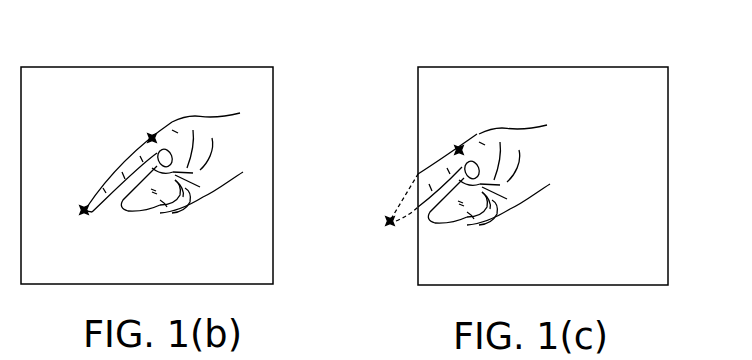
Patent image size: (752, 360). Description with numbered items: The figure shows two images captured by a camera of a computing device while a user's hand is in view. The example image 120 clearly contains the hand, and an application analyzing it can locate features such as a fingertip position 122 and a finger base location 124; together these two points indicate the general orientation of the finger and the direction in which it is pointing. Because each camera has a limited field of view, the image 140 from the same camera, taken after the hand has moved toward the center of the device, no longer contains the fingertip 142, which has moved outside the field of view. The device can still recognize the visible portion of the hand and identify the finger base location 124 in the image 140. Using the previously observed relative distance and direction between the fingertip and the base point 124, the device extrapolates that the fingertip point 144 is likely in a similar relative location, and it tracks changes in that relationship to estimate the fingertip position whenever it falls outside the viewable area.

In FIG. 1B, the example image 120 is at (303, 89).
In FIG. 1B, the fingertip position 122 is at (82, 208).
In FIG. 1B, the finger base location 124 is at (150, 136).
In FIG. 1C, the finger base location 124 is at (458, 148).
In FIG. 1C, the image 140 is at (691, 93).
In FIG. 1C, the fingertip 142 is at (383, 208).
In FIG. 1C, the fingertip point 144 is at (391, 226).